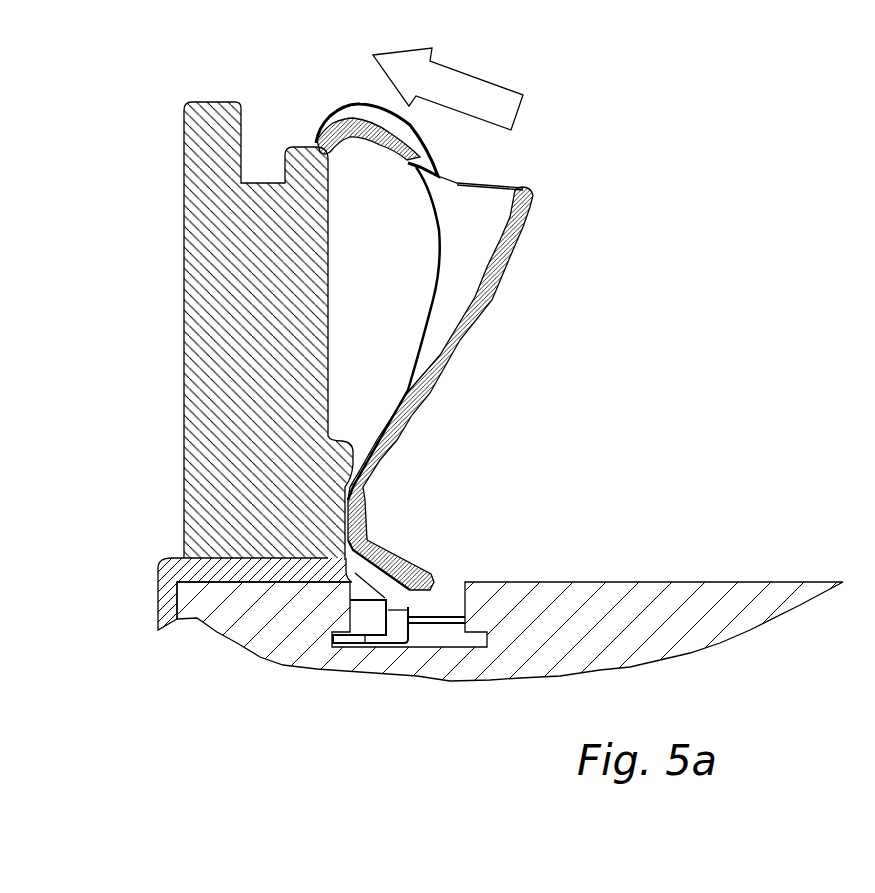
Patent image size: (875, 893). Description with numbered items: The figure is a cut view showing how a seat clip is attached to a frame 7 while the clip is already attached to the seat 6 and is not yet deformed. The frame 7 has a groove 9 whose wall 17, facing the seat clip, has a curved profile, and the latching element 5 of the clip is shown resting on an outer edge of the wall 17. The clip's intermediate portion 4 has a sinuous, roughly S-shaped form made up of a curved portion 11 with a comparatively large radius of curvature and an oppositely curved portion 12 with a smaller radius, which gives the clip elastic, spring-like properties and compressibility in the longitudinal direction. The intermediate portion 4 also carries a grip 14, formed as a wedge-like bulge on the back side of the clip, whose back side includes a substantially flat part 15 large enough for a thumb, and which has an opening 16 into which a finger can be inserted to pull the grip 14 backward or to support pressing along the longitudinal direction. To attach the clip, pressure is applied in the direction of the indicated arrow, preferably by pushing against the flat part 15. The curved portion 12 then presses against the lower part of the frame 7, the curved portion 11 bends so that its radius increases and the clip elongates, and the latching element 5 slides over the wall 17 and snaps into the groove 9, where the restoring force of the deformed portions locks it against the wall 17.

The intermediate portion 4 is at (439, 296).
The latching element 5 is at (336, 118).
The seat 6 is at (745, 592).
The frame 7 is at (170, 243).
The groove 9 is at (256, 170).
The curved portion 11 is at (437, 247).
The curved portion 12 is at (365, 507).
The grip 14 is at (497, 220).
The substantially flat part 15 is at (483, 297).
The opening 16 is at (499, 180).
The wall 17 is at (331, 163).